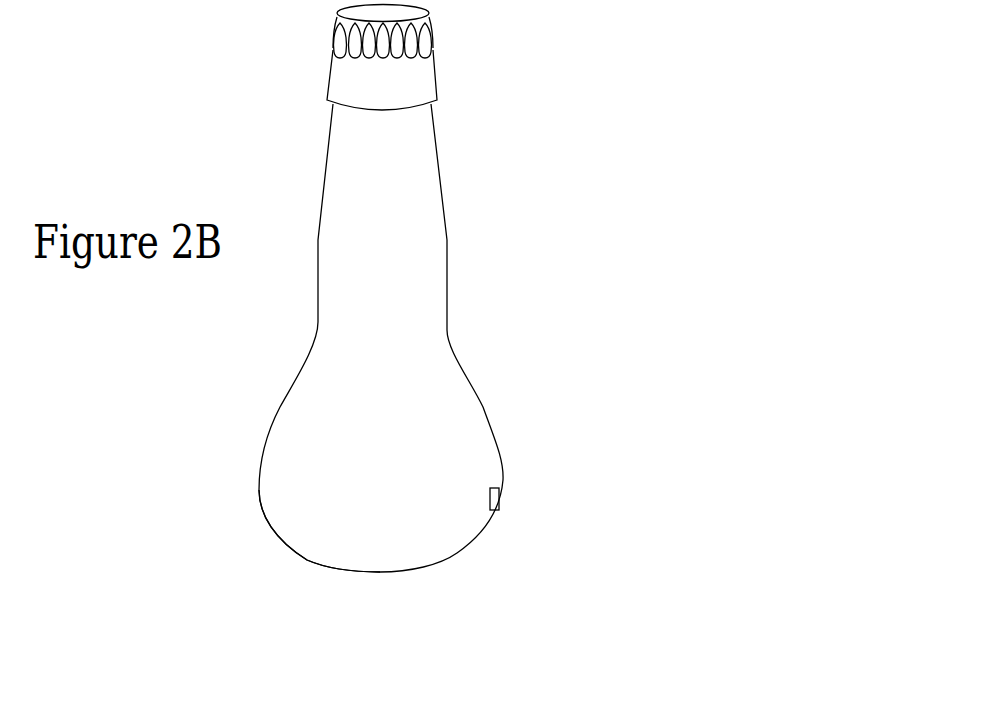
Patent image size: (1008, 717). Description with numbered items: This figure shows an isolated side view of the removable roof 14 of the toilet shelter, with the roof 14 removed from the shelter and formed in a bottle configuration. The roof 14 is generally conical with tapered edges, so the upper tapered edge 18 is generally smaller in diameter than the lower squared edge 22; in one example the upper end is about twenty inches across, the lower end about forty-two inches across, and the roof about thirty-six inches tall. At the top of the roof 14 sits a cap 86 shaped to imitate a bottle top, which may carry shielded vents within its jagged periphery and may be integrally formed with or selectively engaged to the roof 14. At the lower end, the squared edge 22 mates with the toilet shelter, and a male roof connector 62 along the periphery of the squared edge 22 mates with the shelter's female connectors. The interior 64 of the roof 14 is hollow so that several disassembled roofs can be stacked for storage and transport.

The cap 86 is at (365, 7).
The roof 14 is at (432, 108).
The tapered edge 18 is at (445, 193).
The squared edge 22 is at (503, 455).
The male roof connector 62 is at (500, 509).
The interior 64 is at (325, 566).